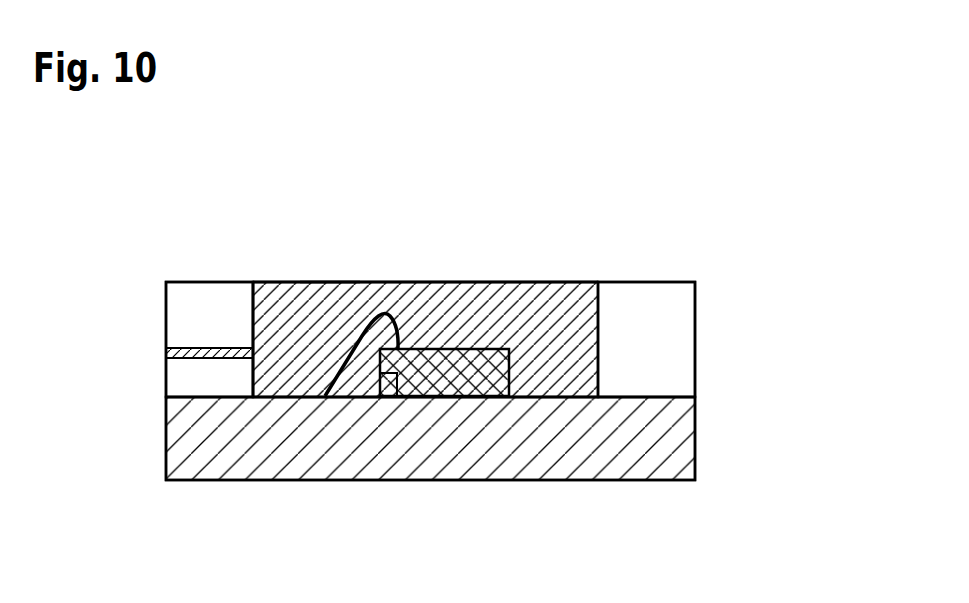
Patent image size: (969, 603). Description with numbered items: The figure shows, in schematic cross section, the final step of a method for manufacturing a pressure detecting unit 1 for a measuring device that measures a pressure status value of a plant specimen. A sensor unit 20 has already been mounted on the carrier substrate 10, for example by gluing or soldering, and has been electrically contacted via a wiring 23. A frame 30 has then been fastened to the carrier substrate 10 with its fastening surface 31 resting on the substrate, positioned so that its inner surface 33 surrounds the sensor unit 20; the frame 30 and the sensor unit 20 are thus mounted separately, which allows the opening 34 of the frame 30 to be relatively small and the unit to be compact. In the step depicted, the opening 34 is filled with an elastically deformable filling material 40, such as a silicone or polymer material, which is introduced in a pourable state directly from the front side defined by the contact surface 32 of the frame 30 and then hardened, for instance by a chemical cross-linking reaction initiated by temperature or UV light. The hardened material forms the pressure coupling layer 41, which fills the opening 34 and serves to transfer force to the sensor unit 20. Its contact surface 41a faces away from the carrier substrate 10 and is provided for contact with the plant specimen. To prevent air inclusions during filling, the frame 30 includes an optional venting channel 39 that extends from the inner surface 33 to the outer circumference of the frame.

The pressure detecting unit 1 is at (724, 121).
The carrier substrate 10 is at (667, 440).
The sensor unit 20 is at (472, 366).
The wiring 23 is at (397, 376).
The frame 30 is at (667, 354).
The fastening surface 31 is at (243, 418).
The contact surface 32 is at (197, 258).
The inner surface 33 is at (268, 346).
The opening 34 is at (330, 266).
The venting channel 39 is at (190, 357).
The filling material 40 is at (425, 284).
The pressure coupling layer 41 is at (552, 300).
The contact surface 41a is at (388, 258).